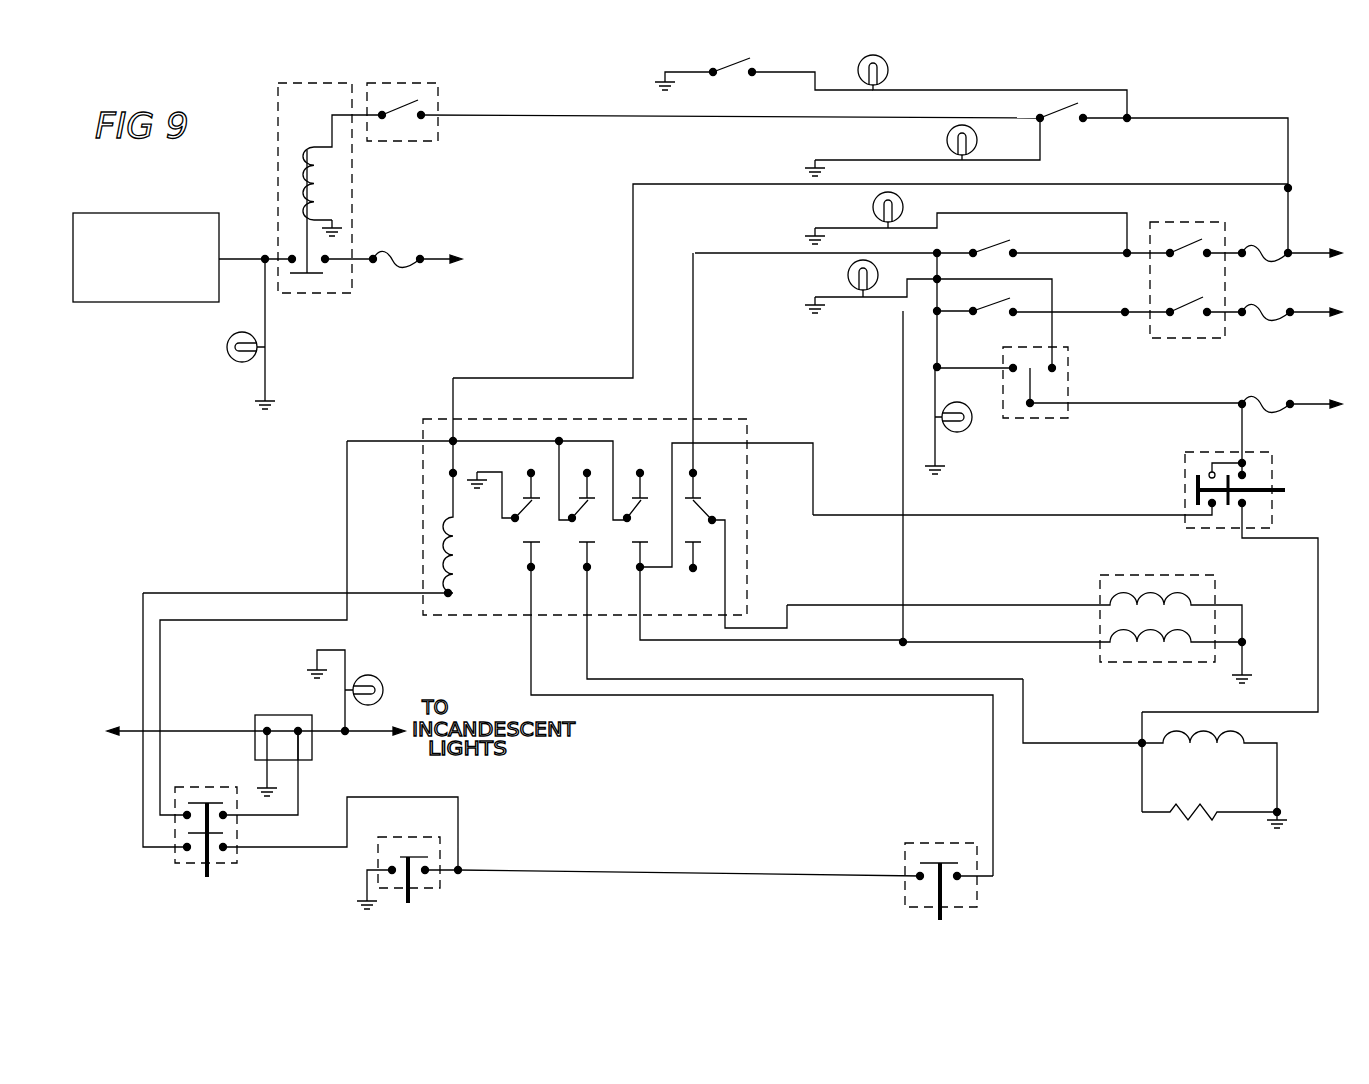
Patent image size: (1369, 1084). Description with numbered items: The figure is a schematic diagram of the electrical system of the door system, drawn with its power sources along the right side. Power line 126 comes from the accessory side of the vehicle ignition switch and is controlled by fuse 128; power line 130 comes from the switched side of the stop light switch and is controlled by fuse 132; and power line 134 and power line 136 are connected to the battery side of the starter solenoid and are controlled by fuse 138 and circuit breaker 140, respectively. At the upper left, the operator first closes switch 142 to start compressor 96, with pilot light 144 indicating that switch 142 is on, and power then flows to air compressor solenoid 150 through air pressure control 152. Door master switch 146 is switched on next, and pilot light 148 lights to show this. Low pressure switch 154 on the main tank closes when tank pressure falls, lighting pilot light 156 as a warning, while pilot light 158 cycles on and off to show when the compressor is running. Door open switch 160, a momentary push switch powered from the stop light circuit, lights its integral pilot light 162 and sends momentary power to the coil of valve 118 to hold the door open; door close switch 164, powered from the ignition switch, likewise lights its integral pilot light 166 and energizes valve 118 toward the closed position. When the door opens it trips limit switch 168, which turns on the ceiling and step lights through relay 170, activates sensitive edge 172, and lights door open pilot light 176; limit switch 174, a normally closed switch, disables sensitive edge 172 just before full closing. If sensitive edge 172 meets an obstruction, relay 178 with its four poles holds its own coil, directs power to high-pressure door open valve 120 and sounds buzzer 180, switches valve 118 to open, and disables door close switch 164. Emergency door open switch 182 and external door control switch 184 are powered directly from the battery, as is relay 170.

The compressor 96 is at (173, 213).
The valve 118 is at (1152, 574).
The high-pressure door open valve 120 is at (1243, 733).
The power line 126 is at (1313, 252).
The fuse 128 is at (1273, 246).
The power line 130 is at (1310, 310).
The fuse 132 is at (1270, 322).
The power line 134 is at (1310, 402).
The power line 136 is at (435, 260).
The fuse 138 is at (1277, 412).
The circuit breaker 140 is at (392, 252).
The switch 142 is at (1080, 103).
The pilot light 144 is at (947, 140).
The door master switch 146 is at (1182, 222).
The pilot light 148 is at (873, 206).
The air compressor solenoid 150 is at (277, 166).
The air pressure control 152 is at (442, 88).
The low pressure switch 154 is at (745, 68).
The pilot light 156 is at (888, 72).
The pilot light 158 is at (233, 360).
The door open switch 160 is at (990, 310).
The pilot light 162 is at (962, 432).
The door close switch 164 is at (995, 250).
The pilot light 166 is at (848, 275).
The limit switch 168 is at (182, 865).
The relay 170 is at (278, 715).
The sensitive edge 172 is at (415, 833).
The limit switch 174 is at (905, 888).
The door open pilot light 176 is at (370, 677).
The relay 178 is at (608, 420).
The buzzer 180 is at (1192, 820).
The emergency door open switch 182 is at (1185, 481).
The external door control switch 184 is at (1048, 418).